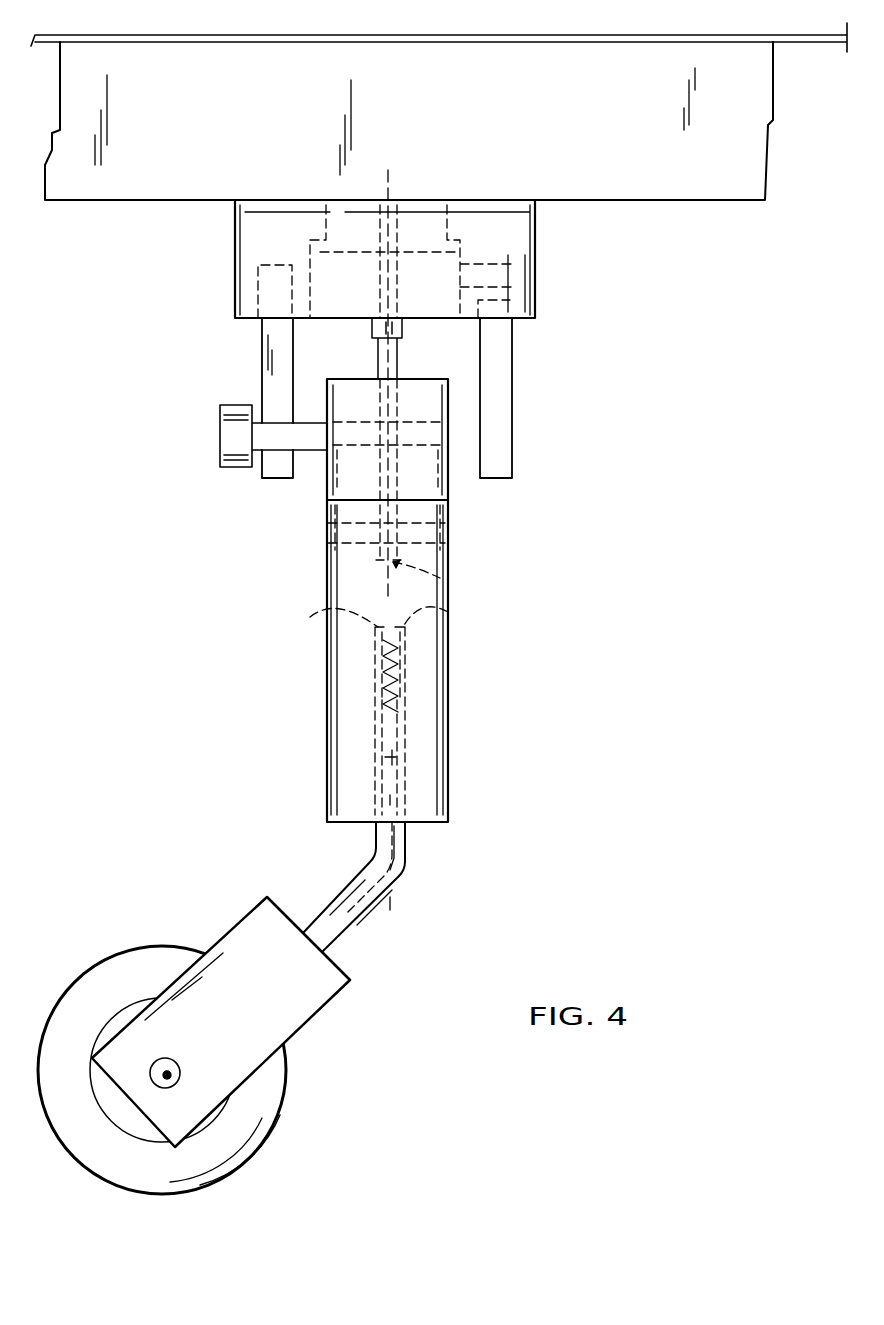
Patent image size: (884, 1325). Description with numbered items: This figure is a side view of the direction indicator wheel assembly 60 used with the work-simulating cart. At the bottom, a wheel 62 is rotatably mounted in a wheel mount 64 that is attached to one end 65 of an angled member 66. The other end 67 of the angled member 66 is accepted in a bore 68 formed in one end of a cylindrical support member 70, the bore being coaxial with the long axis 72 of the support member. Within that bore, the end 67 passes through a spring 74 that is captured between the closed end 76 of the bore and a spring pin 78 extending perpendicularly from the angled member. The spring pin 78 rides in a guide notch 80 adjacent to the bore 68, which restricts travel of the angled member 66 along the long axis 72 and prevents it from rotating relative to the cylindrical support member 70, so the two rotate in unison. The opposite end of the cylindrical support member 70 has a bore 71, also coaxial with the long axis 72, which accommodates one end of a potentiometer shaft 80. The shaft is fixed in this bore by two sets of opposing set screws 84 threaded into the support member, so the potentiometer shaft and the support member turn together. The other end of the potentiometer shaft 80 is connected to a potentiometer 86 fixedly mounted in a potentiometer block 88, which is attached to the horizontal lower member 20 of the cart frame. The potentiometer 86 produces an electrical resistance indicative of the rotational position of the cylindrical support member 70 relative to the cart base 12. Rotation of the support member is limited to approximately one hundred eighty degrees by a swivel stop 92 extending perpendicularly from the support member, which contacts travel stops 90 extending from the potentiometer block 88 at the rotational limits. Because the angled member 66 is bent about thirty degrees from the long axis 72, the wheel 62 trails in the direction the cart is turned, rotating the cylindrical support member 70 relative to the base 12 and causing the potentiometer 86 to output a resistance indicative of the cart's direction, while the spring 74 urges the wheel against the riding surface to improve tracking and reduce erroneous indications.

The horizontal planar base 12 is at (468, 36).
The horizontal lower member 20 is at (505, 80).
The direction indicator wheel assembly 60 is at (598, 373).
The wheel 62 is at (255, 1153).
The wheel mount 64 is at (300, 1015).
The one end of angled member 65 is at (337, 947).
The angled member 66 is at (392, 873).
The other end of angled member 67 is at (394, 758).
The bore 68 is at (448, 612).
The cylindrical support member 70 is at (342, 780).
The bore 71 is at (445, 580).
The long axis 72 is at (392, 908).
The spring 74 is at (402, 678).
The closed end of the bore 76 is at (320, 613).
The spring pin 78 is at (405, 714).
The potentiometer shaft 80 is at (397, 354).
The set screws 84 is at (448, 440).
The potentiometer 86 is at (392, 255).
The potentiometer block 88 is at (513, 228).
The travel stops 90 is at (265, 343).
The swivel stop 92 is at (233, 410).